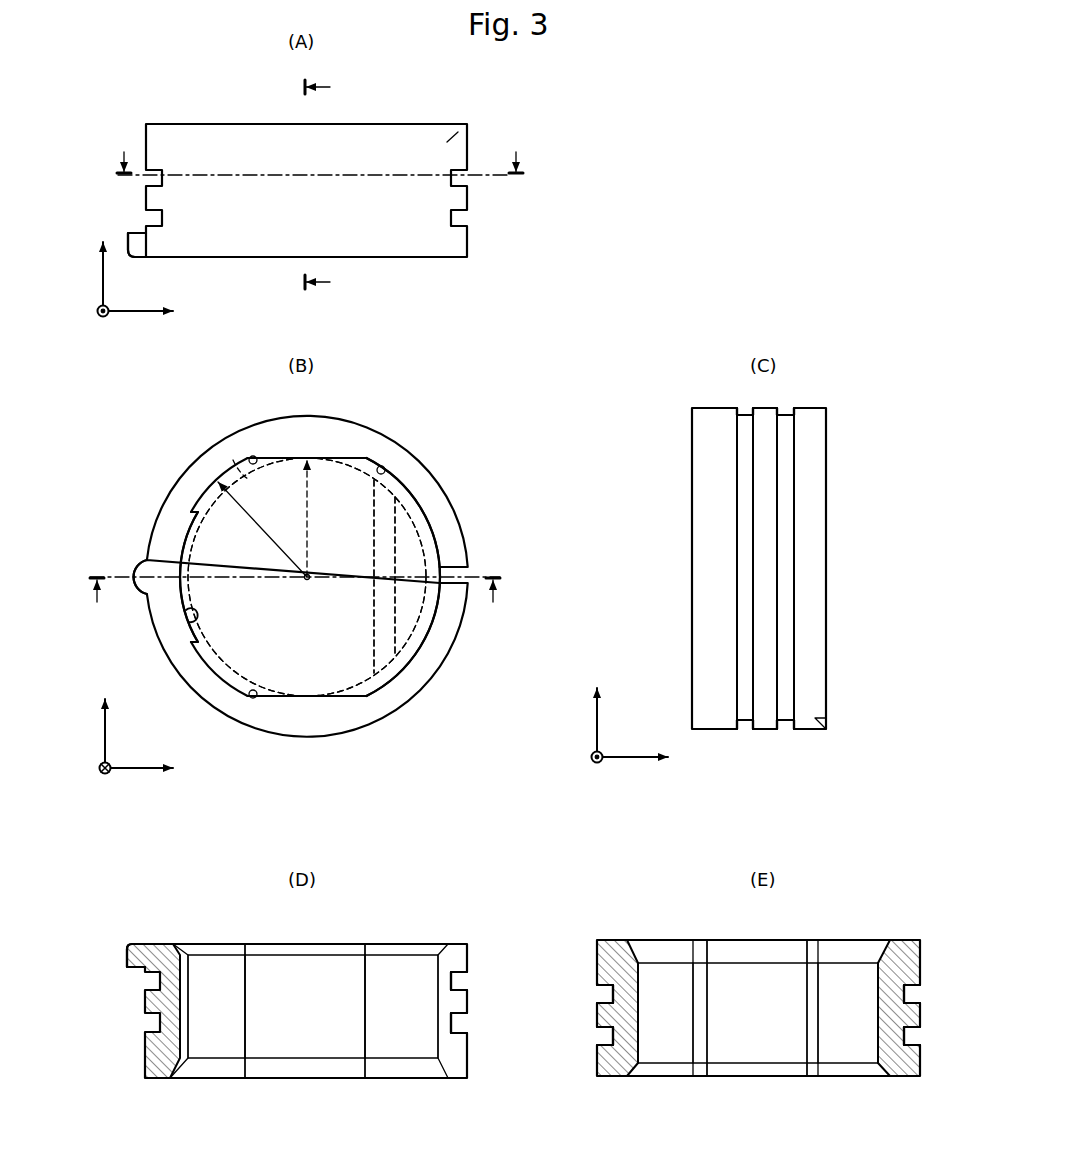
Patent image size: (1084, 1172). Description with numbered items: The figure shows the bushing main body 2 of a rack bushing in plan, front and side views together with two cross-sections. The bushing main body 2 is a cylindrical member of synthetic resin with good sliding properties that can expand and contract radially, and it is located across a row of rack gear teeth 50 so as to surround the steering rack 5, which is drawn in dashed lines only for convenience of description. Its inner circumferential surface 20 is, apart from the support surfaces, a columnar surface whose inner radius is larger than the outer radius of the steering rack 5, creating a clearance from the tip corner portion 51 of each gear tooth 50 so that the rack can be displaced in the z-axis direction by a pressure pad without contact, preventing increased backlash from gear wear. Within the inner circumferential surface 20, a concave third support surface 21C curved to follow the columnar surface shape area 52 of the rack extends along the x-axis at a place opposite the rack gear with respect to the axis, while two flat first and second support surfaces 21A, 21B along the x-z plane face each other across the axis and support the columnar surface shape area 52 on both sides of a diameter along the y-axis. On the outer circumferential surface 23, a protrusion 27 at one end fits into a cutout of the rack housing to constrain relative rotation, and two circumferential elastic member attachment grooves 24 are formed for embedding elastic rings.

The bushing main body 2 is at (459, 101).
The steering rack 5 is at (373, 697).
The inner circumferential surface 20 is at (385, 468).
The first support surface 21A is at (250, 698).
The second support surface 21B is at (250, 456).
The third support surface 21C is at (196, 618).
The outer circumferential surface 23 is at (448, 142).
The elastic member attachment groove 24 is at (745, 733).
The protrusion 27 is at (137, 565).
The rack gear tooth 50 is at (398, 556).
The tip corner portion 51 is at (396, 500).
The columnar surface shape area 52 is at (233, 460).